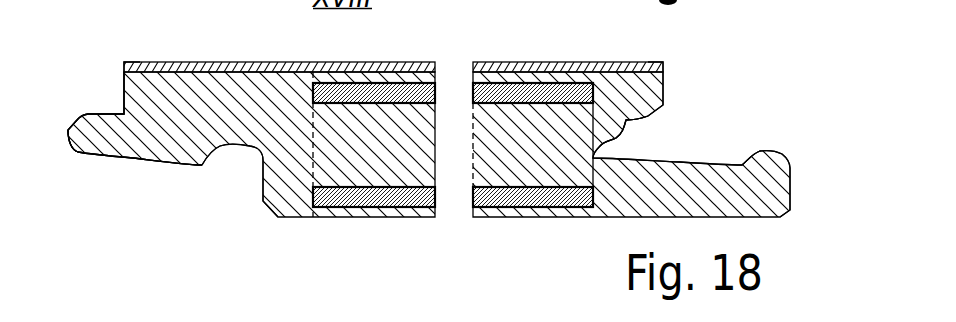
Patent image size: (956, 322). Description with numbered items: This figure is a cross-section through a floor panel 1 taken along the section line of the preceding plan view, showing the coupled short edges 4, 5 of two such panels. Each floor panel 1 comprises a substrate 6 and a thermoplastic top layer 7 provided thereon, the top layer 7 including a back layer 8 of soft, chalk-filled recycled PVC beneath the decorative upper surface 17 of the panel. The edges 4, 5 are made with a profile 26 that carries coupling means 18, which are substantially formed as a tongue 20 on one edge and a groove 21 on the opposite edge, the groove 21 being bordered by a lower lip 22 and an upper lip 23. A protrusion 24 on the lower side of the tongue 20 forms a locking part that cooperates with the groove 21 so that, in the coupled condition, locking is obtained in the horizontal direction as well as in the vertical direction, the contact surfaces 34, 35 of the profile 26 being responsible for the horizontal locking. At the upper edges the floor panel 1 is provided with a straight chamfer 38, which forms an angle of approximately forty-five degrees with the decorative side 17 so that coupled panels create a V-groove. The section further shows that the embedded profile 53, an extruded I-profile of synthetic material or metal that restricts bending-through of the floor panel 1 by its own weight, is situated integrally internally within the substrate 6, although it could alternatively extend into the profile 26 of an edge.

The floor panel 1 is at (240, 143).
The short side or edge 4 is at (94, 177).
The short side or edge 5 is at (752, 119).
The substrate 6 is at (308, 167).
The top layer 7 is at (370, 64).
The back layer 8 is at (98, 92).
The surface of the panel 17 is at (486, 62).
The coupling means 18 is at (634, 139).
The tongue 20 is at (80, 132).
The groove 21 is at (624, 130).
The lower lip 22 is at (635, 188).
The upper lip 23 is at (657, 110).
The protrusion 24 is at (163, 167).
The profile 26 is at (73, 152).
The contact surface 34 is at (222, 170).
The contact surface 35 is at (750, 158).
The chamfer 38 is at (123, 62).
The embedded profile 53 is at (413, 197).